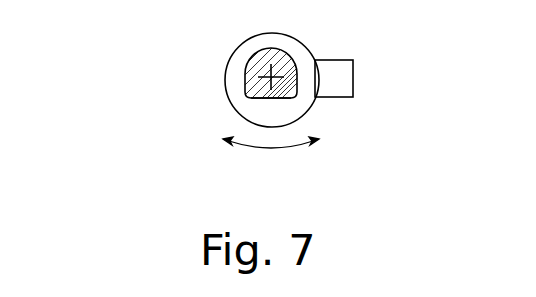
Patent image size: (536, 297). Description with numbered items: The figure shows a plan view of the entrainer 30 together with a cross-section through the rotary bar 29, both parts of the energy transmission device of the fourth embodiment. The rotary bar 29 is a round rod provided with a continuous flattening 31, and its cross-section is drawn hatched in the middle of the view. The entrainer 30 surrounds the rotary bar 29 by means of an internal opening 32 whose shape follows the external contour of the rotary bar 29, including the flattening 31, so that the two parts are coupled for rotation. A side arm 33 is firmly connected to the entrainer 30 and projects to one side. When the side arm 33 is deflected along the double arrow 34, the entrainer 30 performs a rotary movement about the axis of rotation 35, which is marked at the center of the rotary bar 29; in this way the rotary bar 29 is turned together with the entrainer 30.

The rotary bar 29 is at (283, 63).
The entrainer 30 is at (186, 70).
The flattening 31 is at (288, 97).
The internal opening 32 is at (253, 64).
The side arm 33 is at (338, 73).
The double arrow 34 is at (278, 148).
The axis of rotation 35 is at (258, 92).